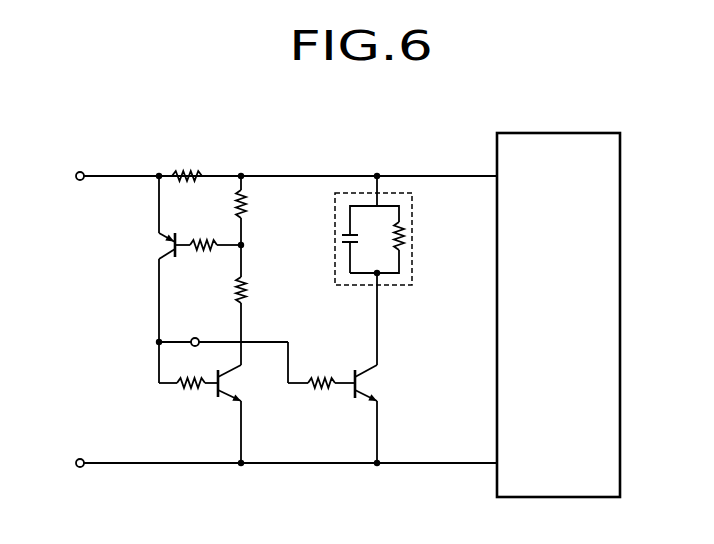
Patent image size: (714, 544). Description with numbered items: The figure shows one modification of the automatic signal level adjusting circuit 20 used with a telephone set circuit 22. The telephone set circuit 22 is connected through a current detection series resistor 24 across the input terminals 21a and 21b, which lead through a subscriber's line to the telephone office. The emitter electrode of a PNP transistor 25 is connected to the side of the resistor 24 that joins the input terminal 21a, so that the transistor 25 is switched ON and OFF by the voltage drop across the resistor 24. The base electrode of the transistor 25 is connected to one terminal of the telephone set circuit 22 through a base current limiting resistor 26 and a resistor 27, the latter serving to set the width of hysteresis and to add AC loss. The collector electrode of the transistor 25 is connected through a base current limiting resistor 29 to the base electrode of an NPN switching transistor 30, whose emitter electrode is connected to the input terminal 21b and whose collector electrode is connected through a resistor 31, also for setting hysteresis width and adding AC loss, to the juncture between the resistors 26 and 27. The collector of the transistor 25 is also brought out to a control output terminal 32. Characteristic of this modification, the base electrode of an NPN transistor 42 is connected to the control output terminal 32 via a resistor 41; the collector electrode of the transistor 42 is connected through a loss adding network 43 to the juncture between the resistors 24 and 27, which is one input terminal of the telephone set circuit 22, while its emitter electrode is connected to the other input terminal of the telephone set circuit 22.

The automatic signal level adjusting circuit 20 is at (229, 150).
The input terminal 21a is at (83, 162).
The input terminal 21b is at (83, 449).
The telephone set circuit 22 is at (558, 315).
The current detection series resistor 24 is at (187, 162).
The PNP transistor 25 is at (156, 247).
The base current limiting resistor 26 is at (208, 233).
The resistor for setting the width of hysteresis and adding AC loss 27 is at (252, 205).
The base current limiting resistor 29 is at (188, 400).
The NPN switching transistor 30 is at (238, 383).
The resistor for setting the width of hysteresis and adding AC loss 31 is at (251, 292).
The control output terminal 32 is at (197, 329).
The resistor 41 is at (321, 371).
The NPN transistor 42 is at (375, 383).
The loss adding network 43 is at (412, 240).